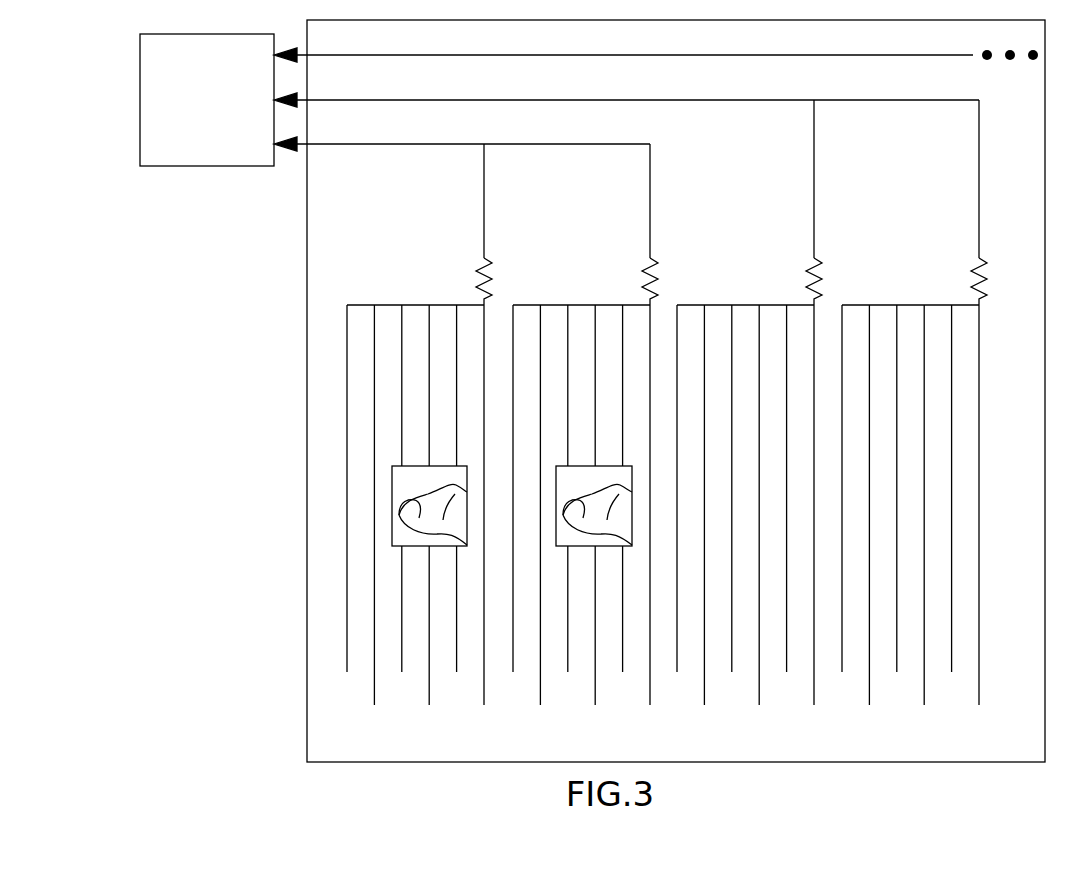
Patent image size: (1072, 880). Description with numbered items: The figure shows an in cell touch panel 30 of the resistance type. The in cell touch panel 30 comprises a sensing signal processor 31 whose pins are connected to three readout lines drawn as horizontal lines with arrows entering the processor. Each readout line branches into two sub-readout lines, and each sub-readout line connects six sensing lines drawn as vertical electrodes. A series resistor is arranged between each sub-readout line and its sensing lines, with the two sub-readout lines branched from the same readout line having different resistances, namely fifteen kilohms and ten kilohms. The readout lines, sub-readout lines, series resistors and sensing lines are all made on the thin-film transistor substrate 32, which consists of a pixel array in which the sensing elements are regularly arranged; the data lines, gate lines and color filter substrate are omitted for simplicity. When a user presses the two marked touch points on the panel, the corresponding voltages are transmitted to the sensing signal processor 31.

The in cell touch panel 30 is at (50, 83).
The sensing signal processor 31 is at (205, 167).
The thin-film transistor substrate 32 is at (307, 474).